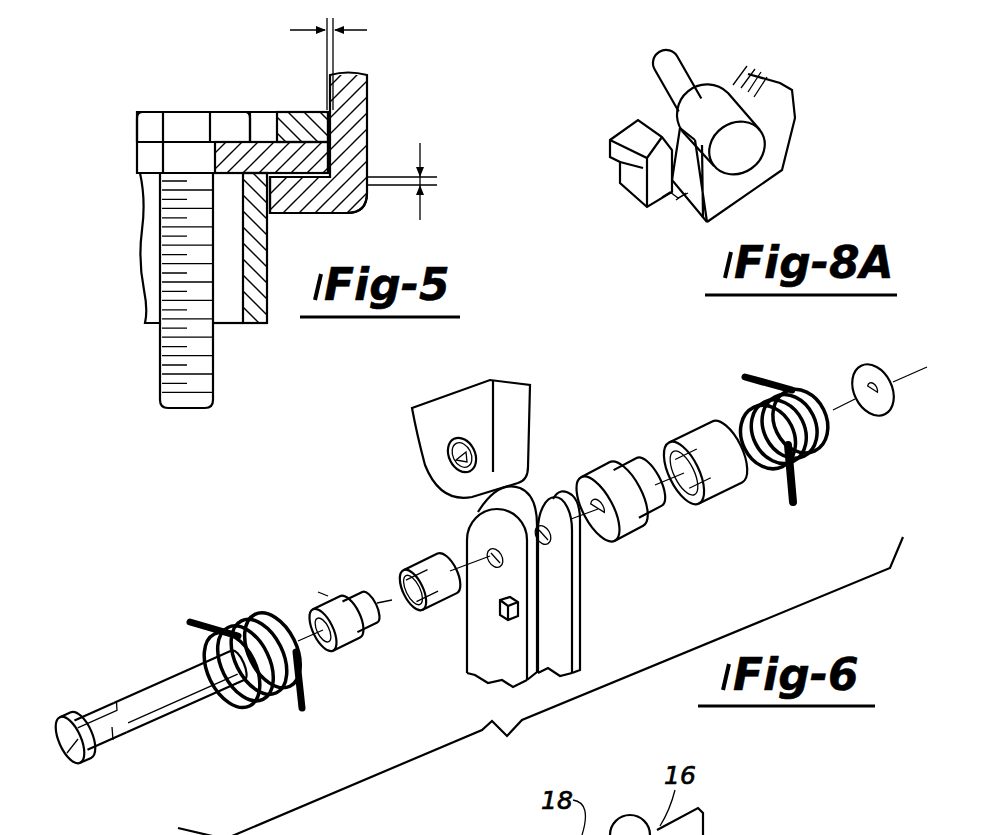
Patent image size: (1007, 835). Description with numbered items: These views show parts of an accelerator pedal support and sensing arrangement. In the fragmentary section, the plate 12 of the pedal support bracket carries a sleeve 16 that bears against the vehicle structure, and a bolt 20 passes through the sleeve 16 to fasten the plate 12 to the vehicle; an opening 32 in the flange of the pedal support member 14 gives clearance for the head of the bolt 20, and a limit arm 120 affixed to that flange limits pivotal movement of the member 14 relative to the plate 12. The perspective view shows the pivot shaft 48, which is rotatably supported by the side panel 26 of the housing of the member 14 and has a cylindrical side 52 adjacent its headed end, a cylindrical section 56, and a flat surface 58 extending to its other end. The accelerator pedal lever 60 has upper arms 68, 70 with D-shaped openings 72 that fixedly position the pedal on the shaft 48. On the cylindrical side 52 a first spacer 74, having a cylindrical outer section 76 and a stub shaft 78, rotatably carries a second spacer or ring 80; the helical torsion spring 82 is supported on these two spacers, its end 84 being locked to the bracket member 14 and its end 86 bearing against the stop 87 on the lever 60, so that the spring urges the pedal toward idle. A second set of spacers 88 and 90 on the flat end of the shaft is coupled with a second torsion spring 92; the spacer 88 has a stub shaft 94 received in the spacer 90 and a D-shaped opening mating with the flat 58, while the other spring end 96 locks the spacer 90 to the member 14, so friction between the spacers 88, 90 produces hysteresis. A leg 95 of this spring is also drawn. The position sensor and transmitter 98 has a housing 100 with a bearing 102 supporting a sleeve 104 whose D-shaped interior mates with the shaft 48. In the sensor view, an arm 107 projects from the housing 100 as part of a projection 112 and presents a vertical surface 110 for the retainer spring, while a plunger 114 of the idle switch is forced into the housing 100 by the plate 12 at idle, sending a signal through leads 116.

In FIG. 5, the plate 12 is at (140, 155).
In FIG. 5, the pedal support member 14 is at (374, 101).
In FIG. 5, the sleeve 16 is at (270, 232).
In FIG. 5, the bolt 20 is at (185, 128).
In FIG. 5, the side panel 26 is at (369, 143).
In FIG. 5, the opening 32 is at (230, 112).
In FIG. 5, the limit arm 120 is at (337, 213).
In FIG. 6, the pivot shaft 48 is at (73, 744).
In FIG. 6, the cylindrical side of the shaft 52 is at (112, 727).
In FIG. 6, the cylindrical section 56 is at (220, 693).
In FIG. 6, the flat surface 58 is at (150, 693).
In FIG. 6, the accelerator pedal lever 60 is at (528, 585).
In FIG. 6, the upper arm 68 is at (577, 645).
In FIG. 6, the upper arm 70 is at (467, 653).
In FIG. 6, the D-shaped opening 72 is at (491, 549).
In FIG. 6, the first spacer 74 is at (321, 594).
In FIG. 6, the cylindrical outer section 76 is at (350, 658).
In FIG. 6, the stub shaft cylindrical section 78 is at (373, 627).
In FIG. 6, the second spacer or ring 80 is at (413, 548).
In FIG. 6, the helical torsion spring 82 is at (253, 623).
In FIG. 6, the spring end 84 is at (190, 625).
In FIG. 6, the spring end 86 is at (300, 715).
In FIG. 6, the stop 87 is at (503, 620).
In FIG. 6, the spacer 88 is at (625, 548).
In FIG. 6, the spacer 90 is at (718, 497).
In FIG. 6, the second torsion spring 92 is at (829, 412).
In FIG. 6, the stub shaft 94 is at (637, 467).
In FIG. 6, the spring leg 95 is at (798, 488).
In FIG. 6, the spring end 96 is at (773, 372).
In FIG. 8A, the position sensor and transmitter 98 is at (725, 68).
In FIG. 6, the position sensor and transmitter 98 is at (477, 420).
In FIG. 6, the bearing 102 is at (480, 443).
In FIG. 6, the sleeve 104 is at (450, 446).
In FIG. 8A, the housing 100 is at (737, 185).
In FIG. 8A, the arm 107 is at (617, 183).
In FIG. 8A, the vertical surface 110 is at (665, 200).
In FIG. 8A, the projection 112 is at (680, 200).
In FIG. 8A, the plunger 114 is at (700, 83).
In FIG. 8A, the leads 116 is at (758, 80).